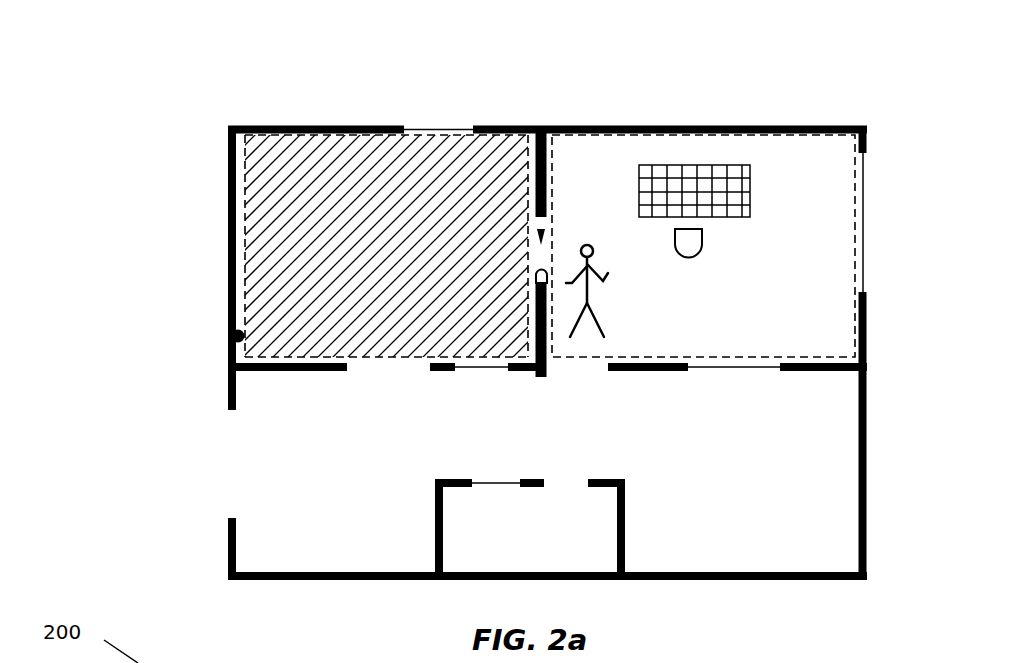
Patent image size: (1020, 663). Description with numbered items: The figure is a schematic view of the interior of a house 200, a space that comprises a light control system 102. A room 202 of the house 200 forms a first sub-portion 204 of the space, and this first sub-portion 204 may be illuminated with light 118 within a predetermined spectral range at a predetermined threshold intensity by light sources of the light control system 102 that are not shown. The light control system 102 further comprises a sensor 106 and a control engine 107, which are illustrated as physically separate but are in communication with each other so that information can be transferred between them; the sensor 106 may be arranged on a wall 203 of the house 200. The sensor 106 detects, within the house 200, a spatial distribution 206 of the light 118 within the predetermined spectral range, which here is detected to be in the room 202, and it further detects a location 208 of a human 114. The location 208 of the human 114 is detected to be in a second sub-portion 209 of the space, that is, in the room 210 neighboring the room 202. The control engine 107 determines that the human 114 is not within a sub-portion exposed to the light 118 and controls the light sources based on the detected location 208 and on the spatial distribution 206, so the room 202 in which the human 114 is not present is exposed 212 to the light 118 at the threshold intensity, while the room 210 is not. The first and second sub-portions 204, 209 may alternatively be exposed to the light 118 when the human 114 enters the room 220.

The house 200 is at (203, 106).
The room 202 is at (243, 156).
The first sub-portion 204 is at (243, 193).
The spatial distribution 206 is at (268, 233).
The exposure 212 is at (267, 274).
The light 118 is at (408, 162).
The control engine 107 is at (236, 340).
The light control system 102 is at (543, 235).
The sensor 106 is at (548, 268).
The human 114 is at (596, 249).
The location 208 is at (597, 336).
The wall 203 is at (547, 340).
The room 210 is at (867, 168).
The second sub-portion 209 is at (866, 262).
The room 220 is at (598, 560).